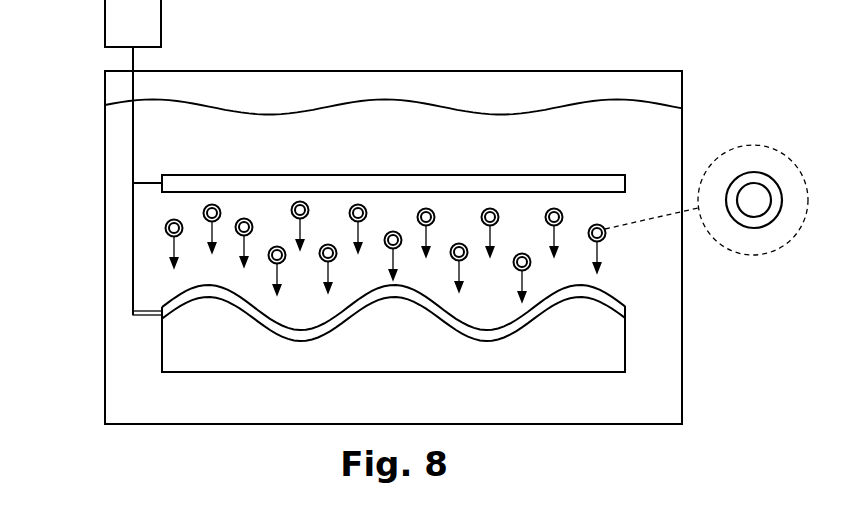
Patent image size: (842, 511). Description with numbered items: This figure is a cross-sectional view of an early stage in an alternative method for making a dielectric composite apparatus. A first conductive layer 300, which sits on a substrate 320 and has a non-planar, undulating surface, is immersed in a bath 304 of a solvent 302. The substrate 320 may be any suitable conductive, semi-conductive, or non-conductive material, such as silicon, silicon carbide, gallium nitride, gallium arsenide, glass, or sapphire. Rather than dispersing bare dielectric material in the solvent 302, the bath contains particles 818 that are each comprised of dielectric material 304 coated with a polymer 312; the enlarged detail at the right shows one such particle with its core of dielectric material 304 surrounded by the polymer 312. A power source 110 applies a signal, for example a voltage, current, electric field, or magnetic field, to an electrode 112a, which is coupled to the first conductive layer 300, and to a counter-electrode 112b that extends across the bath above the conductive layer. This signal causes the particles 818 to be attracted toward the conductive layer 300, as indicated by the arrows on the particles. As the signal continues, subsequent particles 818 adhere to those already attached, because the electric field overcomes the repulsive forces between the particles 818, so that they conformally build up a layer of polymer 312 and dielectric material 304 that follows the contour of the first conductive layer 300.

The power source 110 is at (133, 23).
The electrode 112a is at (133, 313).
The counter-electrode 112b is at (247, 179).
The dielectric material 304 is at (682, 80).
The solvent 302 is at (670, 128).
The polymer 312 is at (768, 217).
The particles 818 is at (606, 238).
The first conductive layer 300 is at (623, 310).
The substrate 320 is at (622, 332).